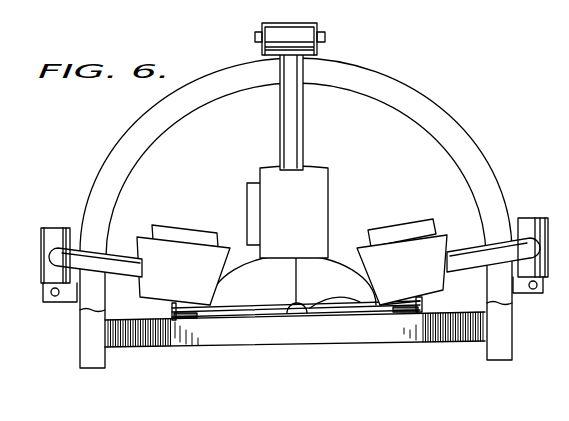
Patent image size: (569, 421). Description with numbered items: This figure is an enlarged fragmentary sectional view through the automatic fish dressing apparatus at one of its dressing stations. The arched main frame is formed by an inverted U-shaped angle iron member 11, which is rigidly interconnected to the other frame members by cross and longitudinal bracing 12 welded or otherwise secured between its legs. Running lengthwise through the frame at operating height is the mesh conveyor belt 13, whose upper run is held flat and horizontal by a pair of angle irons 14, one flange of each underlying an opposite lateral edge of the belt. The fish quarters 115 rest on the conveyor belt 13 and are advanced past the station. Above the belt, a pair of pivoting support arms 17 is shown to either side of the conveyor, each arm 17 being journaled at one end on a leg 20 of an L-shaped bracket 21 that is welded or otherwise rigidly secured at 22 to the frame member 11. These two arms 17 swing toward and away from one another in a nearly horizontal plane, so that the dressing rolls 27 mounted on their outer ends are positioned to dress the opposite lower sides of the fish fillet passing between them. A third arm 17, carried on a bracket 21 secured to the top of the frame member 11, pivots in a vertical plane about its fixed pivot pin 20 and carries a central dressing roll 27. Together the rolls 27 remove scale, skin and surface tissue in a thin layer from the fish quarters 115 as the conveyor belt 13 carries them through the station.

The inverted U-shaped angle iron member 11 is at (203, 110).
The cross and longitudinal bracing 12 is at (190, 348).
The conveyor belt 13 is at (371, 305).
The angle iron 14 is at (425, 304).
The pivoting support arm 17 is at (301, 125).
The leg of L-shaped bracket 20 is at (323, 35).
The L-shaped bracket 21 is at (256, 46).
The securement 22 is at (322, 54).
The dressing roll 27 is at (167, 248).
The fish quarter 115 is at (330, 293).